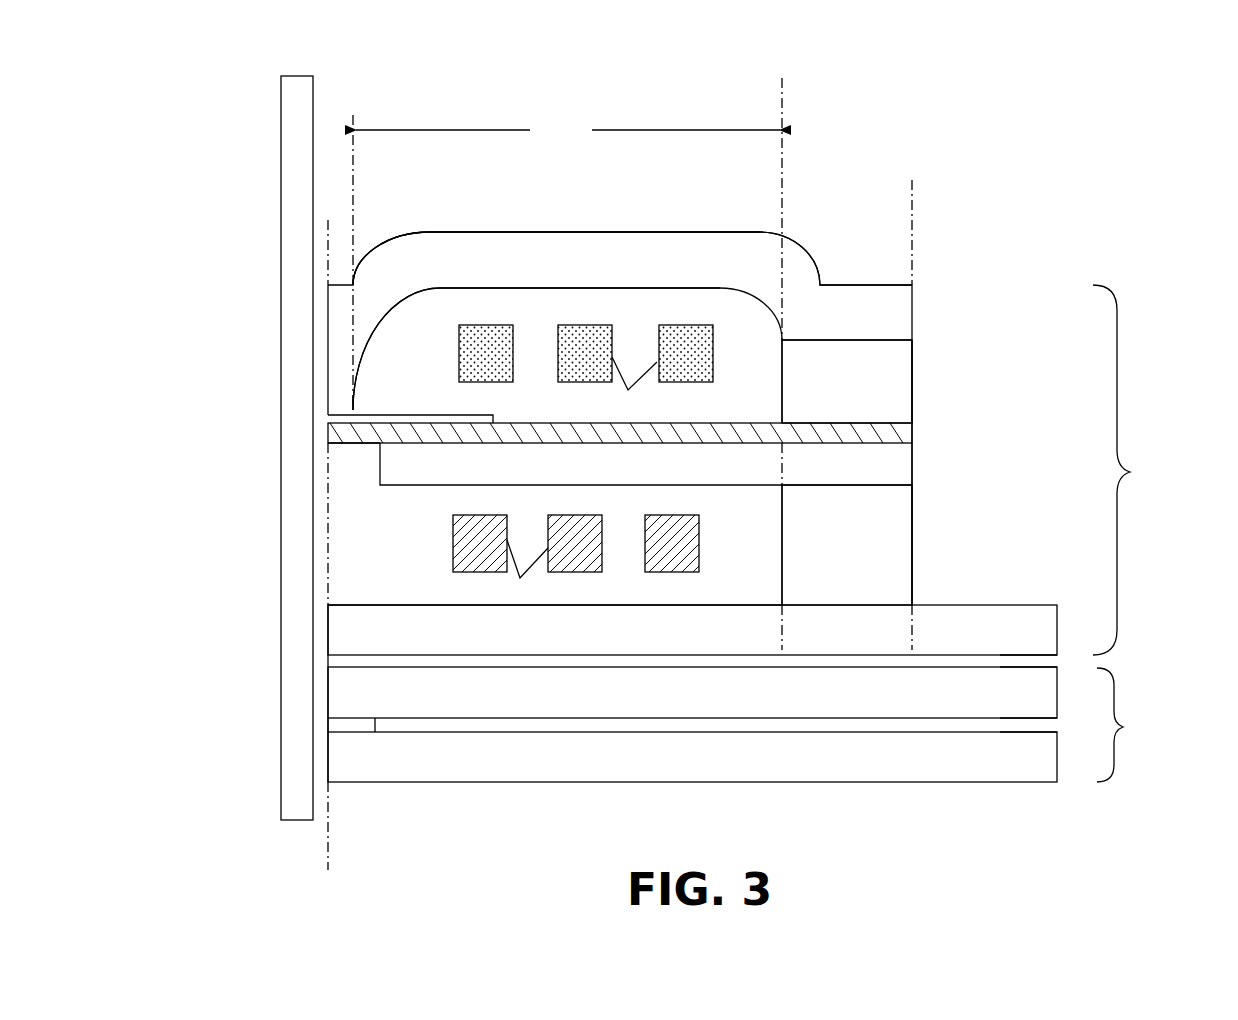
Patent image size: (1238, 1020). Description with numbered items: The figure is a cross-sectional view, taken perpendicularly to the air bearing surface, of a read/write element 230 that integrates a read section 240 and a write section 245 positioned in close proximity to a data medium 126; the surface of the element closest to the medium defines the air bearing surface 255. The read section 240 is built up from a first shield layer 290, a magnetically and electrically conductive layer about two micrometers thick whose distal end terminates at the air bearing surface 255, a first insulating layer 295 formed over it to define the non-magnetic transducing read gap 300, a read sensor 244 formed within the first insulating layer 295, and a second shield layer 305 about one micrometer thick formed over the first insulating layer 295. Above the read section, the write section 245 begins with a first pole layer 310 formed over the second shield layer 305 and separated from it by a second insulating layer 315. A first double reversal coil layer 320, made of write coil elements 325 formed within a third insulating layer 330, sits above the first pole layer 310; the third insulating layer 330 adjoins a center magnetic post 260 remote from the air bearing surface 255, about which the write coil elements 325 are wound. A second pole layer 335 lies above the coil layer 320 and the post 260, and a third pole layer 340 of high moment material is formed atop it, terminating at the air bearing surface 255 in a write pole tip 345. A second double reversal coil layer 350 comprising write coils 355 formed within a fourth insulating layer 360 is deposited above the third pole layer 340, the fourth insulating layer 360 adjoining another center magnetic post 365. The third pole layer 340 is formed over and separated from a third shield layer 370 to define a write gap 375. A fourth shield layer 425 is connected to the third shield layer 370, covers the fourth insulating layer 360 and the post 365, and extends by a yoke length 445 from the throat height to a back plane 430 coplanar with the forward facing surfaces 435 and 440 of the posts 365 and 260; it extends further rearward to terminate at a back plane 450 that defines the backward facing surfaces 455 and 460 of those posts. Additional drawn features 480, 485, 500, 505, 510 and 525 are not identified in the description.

The data medium 126 is at (283, 160).
The read/write element 230 is at (620, 317).
The read sensor 244 is at (358, 727).
The write section 245 is at (1142, 470).
The read section 240 is at (1135, 725).
The air bearing surface 255 is at (330, 862).
The center magnetic post 260 is at (847, 545).
The first shield layer 290 is at (692, 757).
The first insulating layer 295 is at (1060, 727).
The read gap 300 is at (322, 722).
The second shield layer 305 is at (692, 692).
The first pole layer 310 is at (692, 630).
The second insulating layer 315 is at (1060, 665).
The first double reversal coil layer 320 is at (440, 523).
The write coil elements 325 is at (514, 571).
The third insulating layer 330 is at (555, 577).
The second pole layer 335 is at (646, 464).
The third pole layer 340 is at (912, 434).
The write pole tip 345 is at (328, 433).
The second double reversal coil layer 350 is at (552, 354).
The write coils 355 is at (628, 388).
The fourth insulating layer 360 is at (423, 378).
The center magnetic post 365 is at (847, 381).
The third shield layer 370 is at (340, 341).
The write gap 375 is at (328, 418).
The fourth shield layer 425 is at (632, 258).
The back plane 430 is at (783, 92).
The forward facing surface 435 is at (782, 389).
The forward facing surface 440 is at (780, 550).
The yoke length 445 is at (566, 262).
The back plane 450 is at (913, 198).
The backward facing surface 455 is at (912, 364).
The backward facing surface 460 is at (912, 538).
The curved portion of S3 480 is at (433, 297).
The flat portion of S3 485 is at (540, 286).
The flat portion of S4 500 is at (478, 229).
The curved portion of S4 505 is at (422, 230).
The top surface of S4 510 is at (610, 229).
The front tip of S3 525 is at (352, 408).